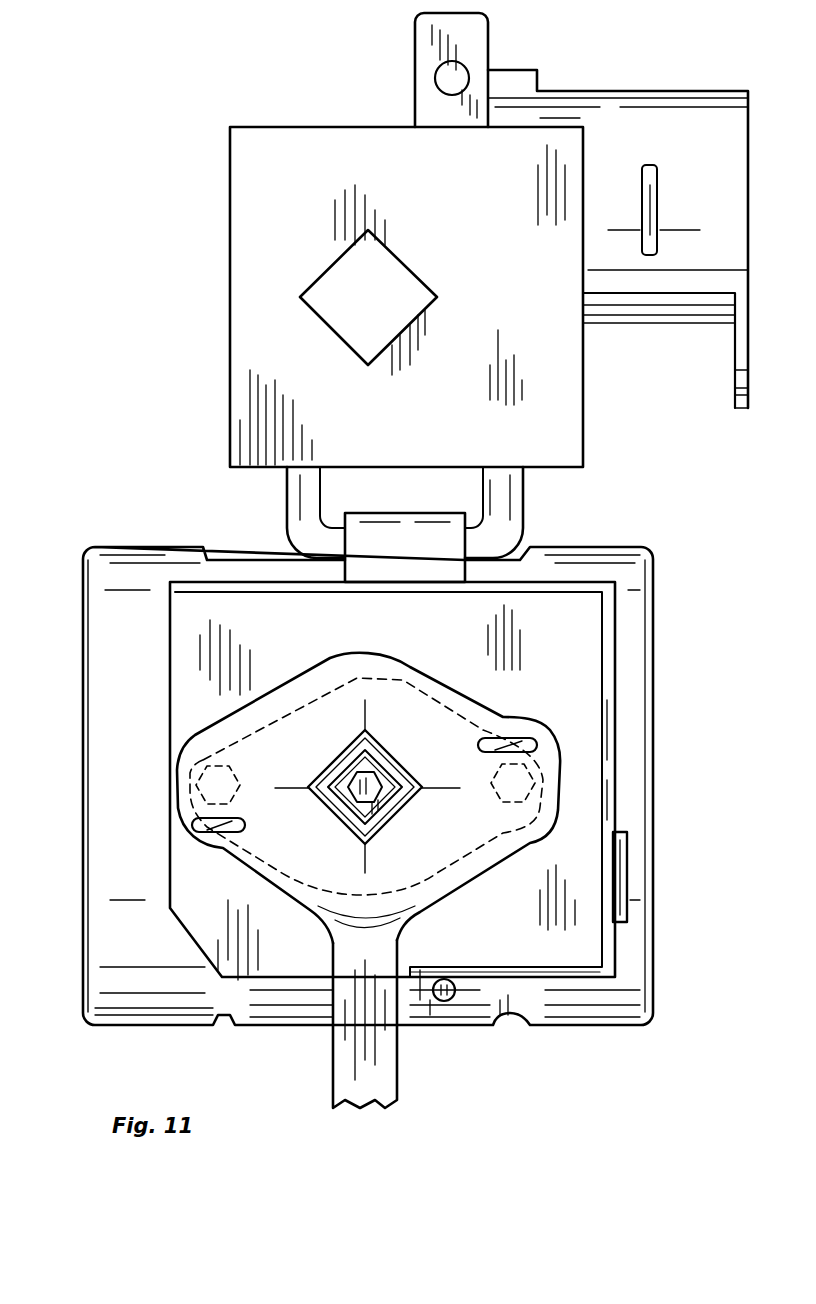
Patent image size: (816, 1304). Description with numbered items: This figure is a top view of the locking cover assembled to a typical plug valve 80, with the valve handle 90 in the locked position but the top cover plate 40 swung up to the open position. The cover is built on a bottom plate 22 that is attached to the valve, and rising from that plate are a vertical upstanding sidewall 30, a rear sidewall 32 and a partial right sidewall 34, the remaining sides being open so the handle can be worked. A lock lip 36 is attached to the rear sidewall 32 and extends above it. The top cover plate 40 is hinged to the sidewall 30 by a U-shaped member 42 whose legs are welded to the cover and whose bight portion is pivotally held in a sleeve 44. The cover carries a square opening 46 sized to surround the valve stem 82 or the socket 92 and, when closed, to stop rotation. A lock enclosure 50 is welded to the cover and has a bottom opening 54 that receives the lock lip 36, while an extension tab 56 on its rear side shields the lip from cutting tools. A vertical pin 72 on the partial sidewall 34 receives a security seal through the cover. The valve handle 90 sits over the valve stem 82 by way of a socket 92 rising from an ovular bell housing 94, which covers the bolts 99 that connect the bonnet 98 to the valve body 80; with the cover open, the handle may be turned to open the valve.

The bottom plate 22 is at (410, 640).
The vertical upstanding sidewall 30 is at (248, 580).
The rear sidewall 32 is at (615, 648).
The partial right sidewall 34 is at (585, 978).
The lock lip 36 is at (627, 862).
The top cover plate 40 is at (428, 433).
The U-shaped member 42 is at (521, 505).
The sleeve 44 is at (432, 513).
The rectangular opening 46 is at (330, 323).
The lock enclosure 50 is at (655, 328).
The bottom opening 54 is at (658, 188).
The extension tab 56 is at (735, 372).
The vertical pin 72 is at (448, 1002).
The plug valve 80 is at (83, 603).
The valve stem 82 is at (388, 783).
The valve handle 90 is at (398, 1080).
The socket 92 is at (385, 757).
The bell housing 94 is at (468, 875).
The bonnet 98 is at (255, 862).
The bolts 99 is at (240, 776).